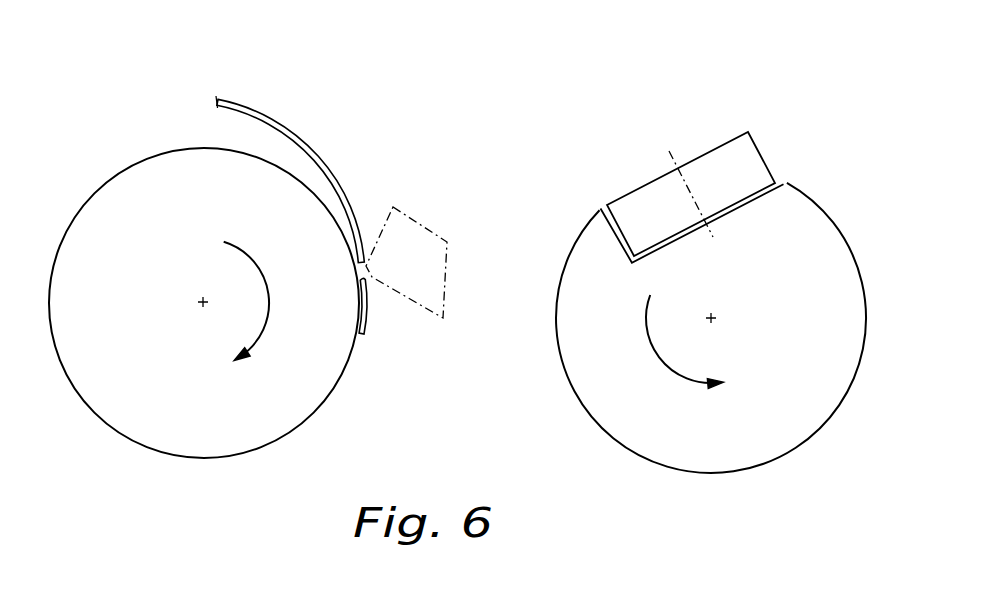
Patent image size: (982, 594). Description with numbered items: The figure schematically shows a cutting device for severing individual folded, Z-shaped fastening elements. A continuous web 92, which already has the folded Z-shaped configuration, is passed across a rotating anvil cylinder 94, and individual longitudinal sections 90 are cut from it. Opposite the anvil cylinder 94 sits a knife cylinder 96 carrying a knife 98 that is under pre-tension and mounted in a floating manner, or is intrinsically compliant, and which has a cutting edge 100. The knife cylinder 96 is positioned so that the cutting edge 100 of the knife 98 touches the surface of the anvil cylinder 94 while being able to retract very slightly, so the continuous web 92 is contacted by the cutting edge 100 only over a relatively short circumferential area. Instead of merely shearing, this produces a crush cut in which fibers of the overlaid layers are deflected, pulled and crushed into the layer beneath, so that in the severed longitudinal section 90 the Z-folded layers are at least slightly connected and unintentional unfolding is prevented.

The longitudinal section 90 is at (365, 328).
The continuous web 92 is at (260, 112).
The anvil cylinder 94 is at (118, 187).
The knife cylinder 96 is at (833, 235).
The knife 98 is at (642, 198).
The cutting edge 100 is at (750, 130).